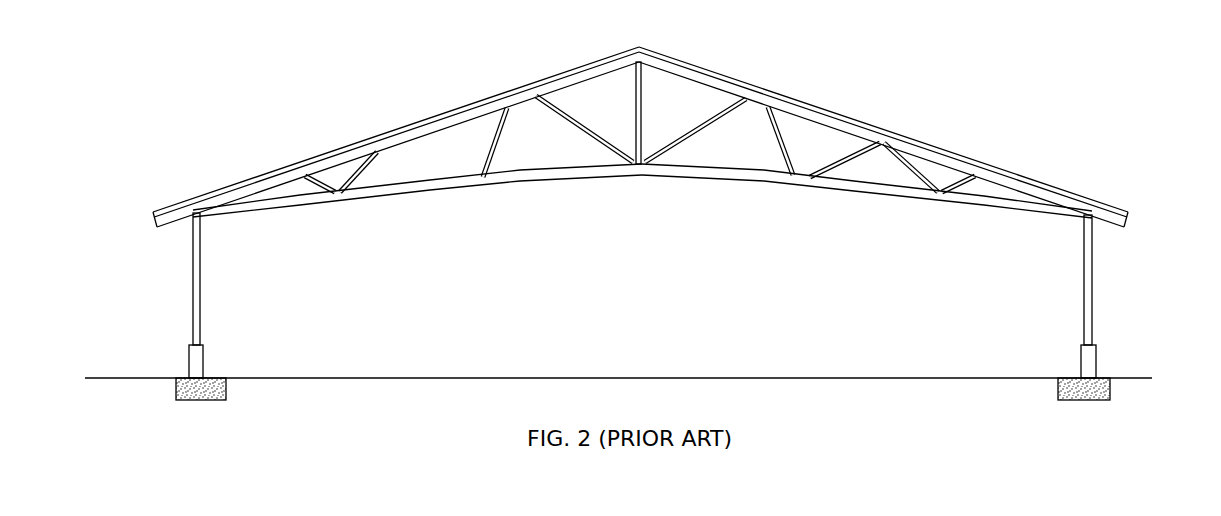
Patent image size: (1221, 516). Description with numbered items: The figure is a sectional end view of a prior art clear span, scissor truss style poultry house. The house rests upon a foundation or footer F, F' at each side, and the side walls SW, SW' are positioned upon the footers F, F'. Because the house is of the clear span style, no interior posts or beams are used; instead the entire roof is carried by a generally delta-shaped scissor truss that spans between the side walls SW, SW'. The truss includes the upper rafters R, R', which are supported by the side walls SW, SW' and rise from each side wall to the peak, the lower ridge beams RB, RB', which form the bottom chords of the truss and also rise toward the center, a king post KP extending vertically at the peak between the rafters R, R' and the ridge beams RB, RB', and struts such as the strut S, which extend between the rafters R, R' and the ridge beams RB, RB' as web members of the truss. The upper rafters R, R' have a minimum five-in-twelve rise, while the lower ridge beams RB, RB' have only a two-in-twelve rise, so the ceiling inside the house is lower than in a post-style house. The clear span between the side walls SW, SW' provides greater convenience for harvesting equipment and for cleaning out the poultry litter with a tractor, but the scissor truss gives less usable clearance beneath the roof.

The king post KP is at (636, 105).
The rafter R' is at (396, 137).
The rafter R is at (883, 136).
The ridge beam RB' is at (417, 204).
The ridge beam RB is at (867, 204).
The strut S is at (852, 160).
The side wall SW' is at (242, 295).
The side wall SW is at (1128, 296).
The footer F' is at (201, 415).
The footer F is at (1084, 415).